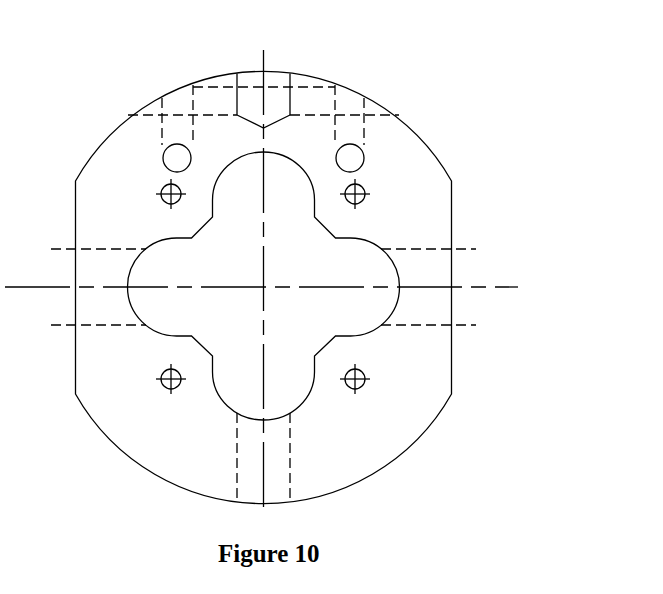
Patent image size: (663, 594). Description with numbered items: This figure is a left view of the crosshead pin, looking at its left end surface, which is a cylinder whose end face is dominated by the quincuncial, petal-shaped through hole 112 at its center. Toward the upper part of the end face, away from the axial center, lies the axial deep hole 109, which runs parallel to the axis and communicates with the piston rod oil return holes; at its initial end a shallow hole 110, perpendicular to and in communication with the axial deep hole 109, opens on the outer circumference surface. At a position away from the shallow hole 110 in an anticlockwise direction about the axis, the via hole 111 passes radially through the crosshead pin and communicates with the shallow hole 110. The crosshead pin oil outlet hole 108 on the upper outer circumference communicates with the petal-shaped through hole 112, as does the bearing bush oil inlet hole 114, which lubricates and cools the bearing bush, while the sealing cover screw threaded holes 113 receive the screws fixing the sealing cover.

The crosshead pin oil outlet hole 108 is at (328, 31).
The axial deep hole 109 is at (183, 139).
The shallow hole 110 is at (357, 114).
The via hole 111 is at (314, 86).
The petal-shaped through hole 112 is at (348, 254).
The sealing cover screw threaded hole 113 is at (366, 176).
The bearing bush oil inlet hole 114 is at (438, 273).